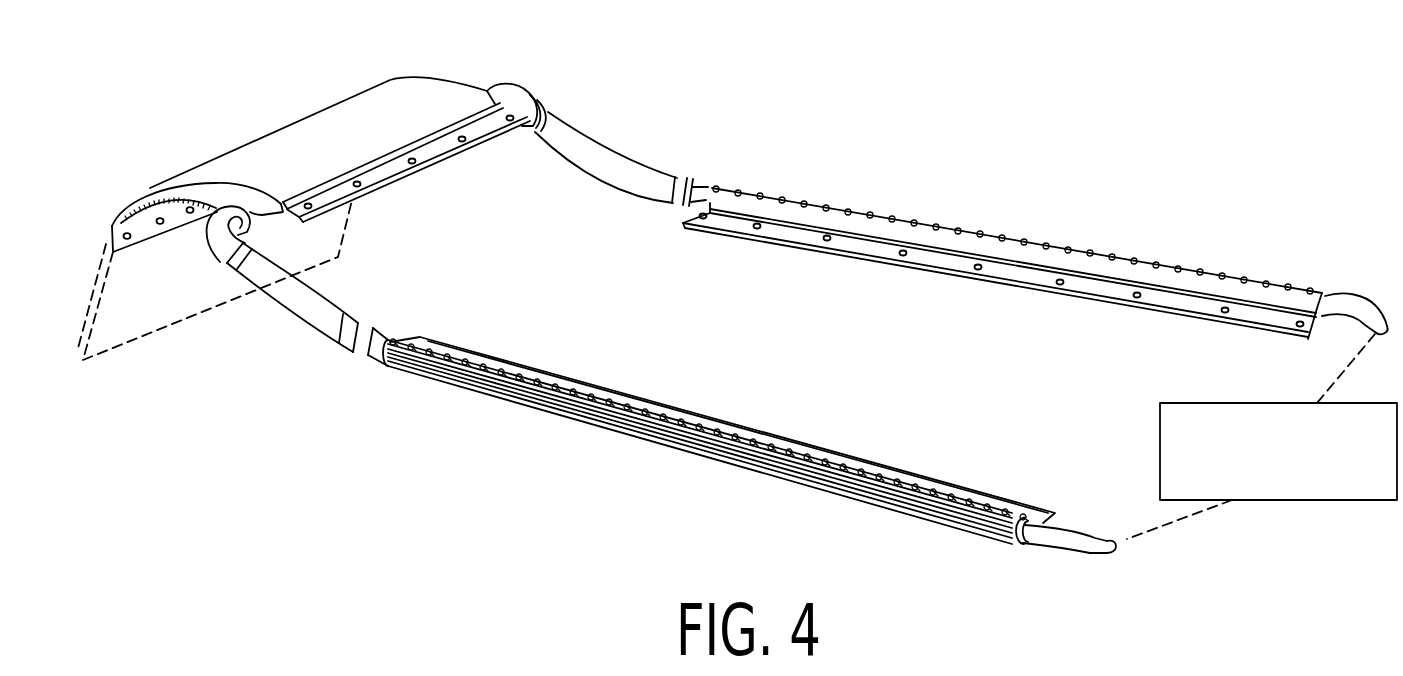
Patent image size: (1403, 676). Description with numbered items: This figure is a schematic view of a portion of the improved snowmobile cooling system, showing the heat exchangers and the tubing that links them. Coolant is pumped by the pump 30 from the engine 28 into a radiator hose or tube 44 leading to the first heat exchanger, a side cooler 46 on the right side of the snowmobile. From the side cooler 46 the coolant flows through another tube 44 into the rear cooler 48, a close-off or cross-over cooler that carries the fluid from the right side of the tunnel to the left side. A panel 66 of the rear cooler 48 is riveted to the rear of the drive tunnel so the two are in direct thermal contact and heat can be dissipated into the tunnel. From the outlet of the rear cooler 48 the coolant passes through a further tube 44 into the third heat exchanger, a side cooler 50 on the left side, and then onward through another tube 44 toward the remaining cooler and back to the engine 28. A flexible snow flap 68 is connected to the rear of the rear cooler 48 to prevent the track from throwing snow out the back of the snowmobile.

The rear cooler 48 is at (373, 108).
The panel 66 is at (436, 147).
The radiator hose or tube 44 is at (563, 135).
The side cooler 50 is at (917, 235).
The side cooler 46 is at (577, 408).
The snow flap 68 is at (150, 303).
The internal combustion engine 28 is at (1262, 451).
The pump 30 is at (1267, 492).